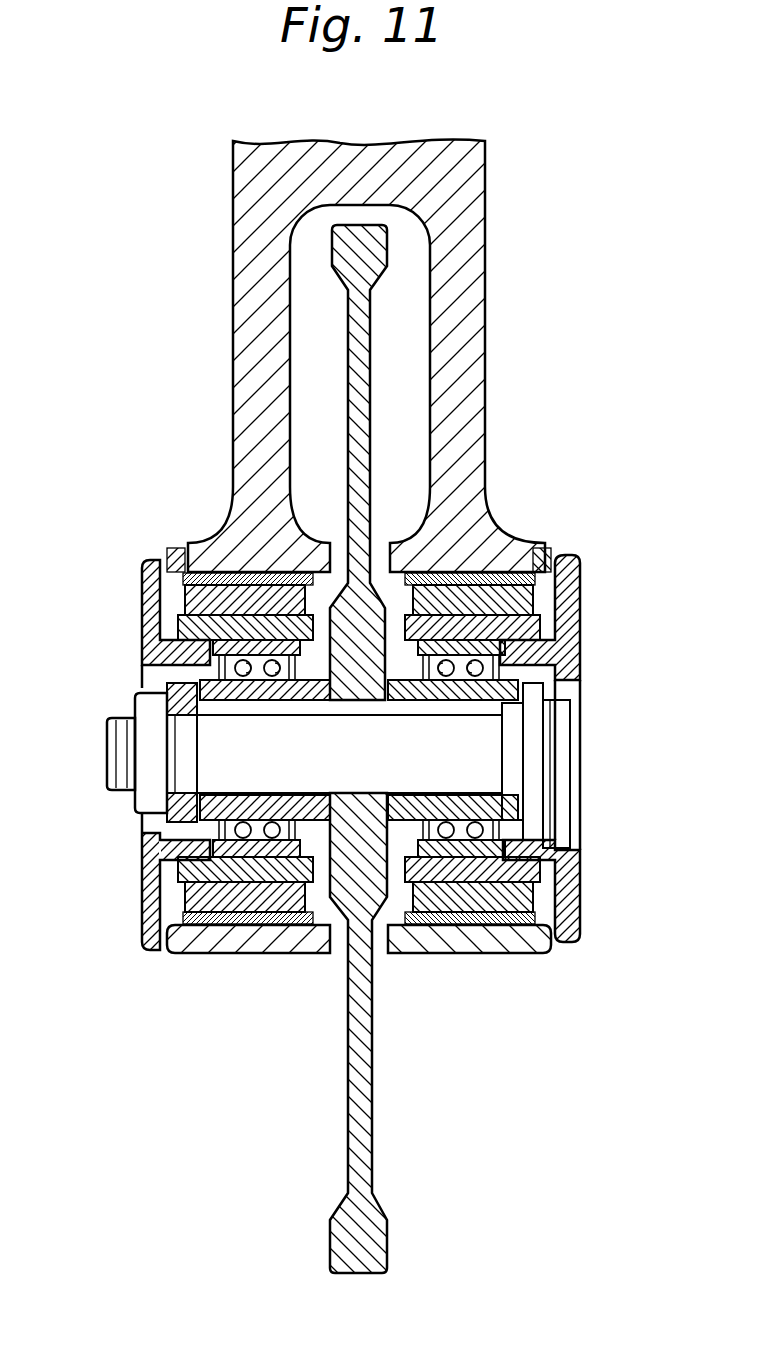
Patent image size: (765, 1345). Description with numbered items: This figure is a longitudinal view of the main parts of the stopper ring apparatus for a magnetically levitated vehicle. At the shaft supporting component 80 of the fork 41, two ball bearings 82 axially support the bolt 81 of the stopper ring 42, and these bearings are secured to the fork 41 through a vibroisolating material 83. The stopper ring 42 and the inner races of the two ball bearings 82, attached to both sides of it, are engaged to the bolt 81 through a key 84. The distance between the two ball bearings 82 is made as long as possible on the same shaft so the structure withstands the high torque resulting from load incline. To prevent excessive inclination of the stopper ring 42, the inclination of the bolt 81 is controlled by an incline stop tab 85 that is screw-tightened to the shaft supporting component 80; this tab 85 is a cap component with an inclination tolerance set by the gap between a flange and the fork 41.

The fork 41 is at (483, 263).
The stopper ring 42 is at (388, 1247).
The shaft supporting component 80 is at (665, 688).
The bolt 81 is at (207, 766).
The ball bearings 82 is at (215, 826).
The vibroisolating material 83 is at (186, 600).
The key 84 is at (220, 710).
The incline stop tab 85 is at (141, 892).